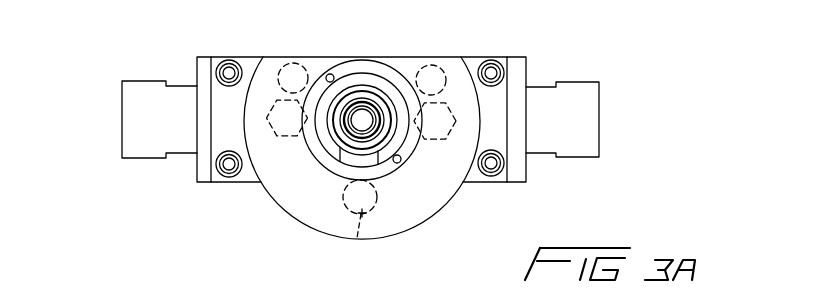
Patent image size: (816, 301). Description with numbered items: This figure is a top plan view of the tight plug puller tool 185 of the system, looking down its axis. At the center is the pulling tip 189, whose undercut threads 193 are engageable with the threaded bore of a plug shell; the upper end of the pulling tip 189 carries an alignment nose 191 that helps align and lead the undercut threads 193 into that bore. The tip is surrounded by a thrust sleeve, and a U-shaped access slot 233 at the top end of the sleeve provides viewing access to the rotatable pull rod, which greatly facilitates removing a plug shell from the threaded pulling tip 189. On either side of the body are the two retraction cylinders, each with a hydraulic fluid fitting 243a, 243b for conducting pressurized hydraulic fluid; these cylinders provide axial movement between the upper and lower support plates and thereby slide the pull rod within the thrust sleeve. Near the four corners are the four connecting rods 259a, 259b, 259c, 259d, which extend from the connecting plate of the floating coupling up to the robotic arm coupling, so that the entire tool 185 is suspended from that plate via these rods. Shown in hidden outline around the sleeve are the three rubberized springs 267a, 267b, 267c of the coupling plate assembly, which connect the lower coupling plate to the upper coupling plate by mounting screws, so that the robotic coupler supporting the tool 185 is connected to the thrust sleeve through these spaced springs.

The plug puller tool 185 is at (243, 246).
The pulling tip 189 is at (373, 103).
The alignment nose 191 is at (362, 117).
The undercut threads 193 is at (350, 105).
The U-shaped access slot 233 is at (377, 152).
The hydraulic fluid fitting 243a is at (134, 128).
The hydraulic fluid fitting 243b is at (592, 125).
The connecting rod 259a is at (229, 172).
The connecting rod 259b is at (491, 172).
The connecting rod 259c is at (492, 70).
The connecting rod 259d is at (227, 67).
The rubberized spring 267a is at (296, 75).
The rubberized spring 267b is at (355, 242).
The rubberized spring 267c is at (437, 63).